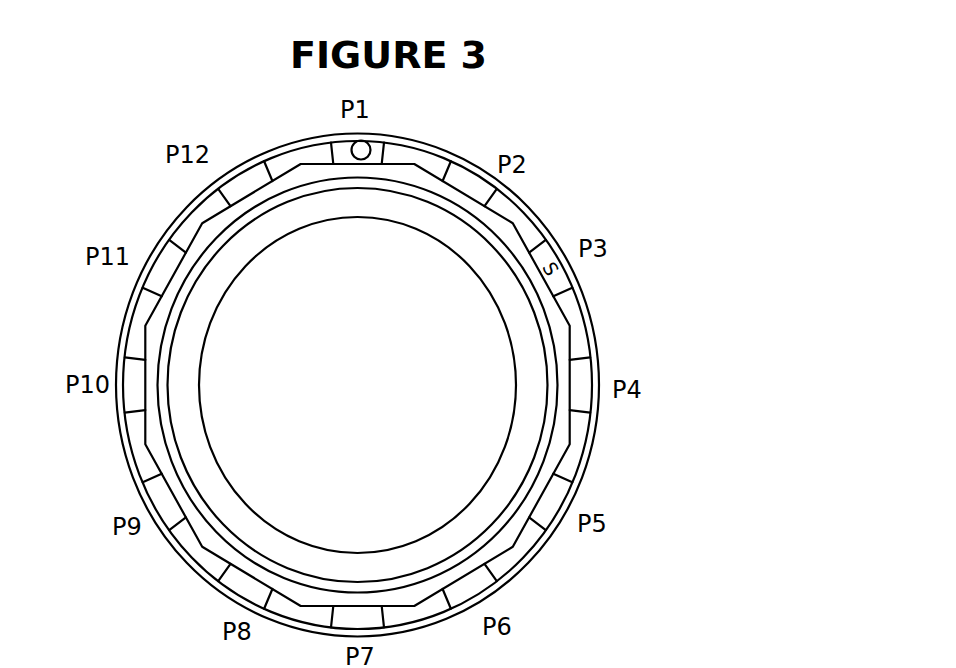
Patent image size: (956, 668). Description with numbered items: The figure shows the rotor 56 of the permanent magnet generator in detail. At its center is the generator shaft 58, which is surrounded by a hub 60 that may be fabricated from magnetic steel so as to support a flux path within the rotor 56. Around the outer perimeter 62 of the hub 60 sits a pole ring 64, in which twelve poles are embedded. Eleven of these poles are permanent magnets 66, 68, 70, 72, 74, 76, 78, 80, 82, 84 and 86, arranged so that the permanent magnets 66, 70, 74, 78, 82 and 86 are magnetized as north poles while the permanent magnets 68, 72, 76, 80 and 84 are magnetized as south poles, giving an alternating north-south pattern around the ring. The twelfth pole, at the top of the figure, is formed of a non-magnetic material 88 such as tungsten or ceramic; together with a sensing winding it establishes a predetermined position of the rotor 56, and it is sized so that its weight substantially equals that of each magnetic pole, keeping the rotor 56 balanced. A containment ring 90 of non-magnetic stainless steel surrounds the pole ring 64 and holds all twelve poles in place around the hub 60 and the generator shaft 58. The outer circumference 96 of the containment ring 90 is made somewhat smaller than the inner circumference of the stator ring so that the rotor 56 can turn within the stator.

The rotor 56 is at (622, 208).
The generator shaft 58 is at (530, 346).
The hub 60 is at (550, 437).
The outer perimeter 62 is at (575, 305).
The pole ring 64 is at (500, 210).
The permanent magnet 66 is at (490, 187).
The permanent magnet 68 is at (567, 273).
The permanent magnet 70 is at (582, 373).
The permanent magnet 72 is at (562, 493).
The permanent magnet 74 is at (480, 589).
The permanent magnet 76 is at (377, 620).
The permanent magnet 78 is at (233, 587).
The permanent magnet 80 is at (168, 517).
The permanent magnet 82 is at (140, 396).
The permanent magnet 84 is at (158, 278).
The permanent magnet 86 is at (263, 170).
The non-magnetic material 88 is at (355, 156).
The containment ring 90 is at (268, 150).
The outer circumference 96 is at (167, 225).